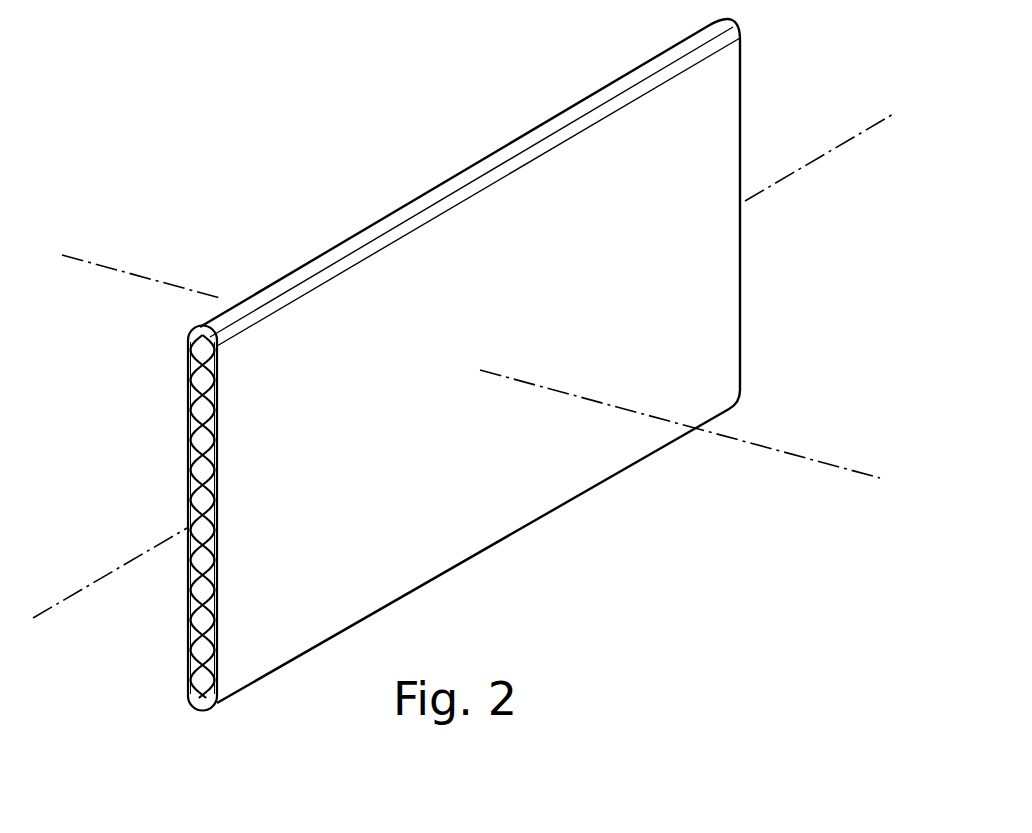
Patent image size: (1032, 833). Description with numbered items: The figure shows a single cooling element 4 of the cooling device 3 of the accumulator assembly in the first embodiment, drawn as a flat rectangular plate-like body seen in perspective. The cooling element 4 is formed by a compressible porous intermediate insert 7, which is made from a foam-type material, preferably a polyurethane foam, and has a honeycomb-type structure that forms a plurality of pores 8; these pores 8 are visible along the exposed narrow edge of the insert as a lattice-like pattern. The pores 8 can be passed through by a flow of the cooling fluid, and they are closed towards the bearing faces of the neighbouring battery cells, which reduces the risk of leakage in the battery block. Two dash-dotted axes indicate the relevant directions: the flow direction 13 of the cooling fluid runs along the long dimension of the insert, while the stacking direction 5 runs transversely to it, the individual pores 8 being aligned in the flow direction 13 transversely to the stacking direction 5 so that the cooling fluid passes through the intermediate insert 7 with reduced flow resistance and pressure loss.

The cooling element 4 is at (540, 356).
The compressible porous intermediate insert 7 is at (540, 356).
The cooling device 3 is at (790, 99).
The pores 8 is at (197, 640).
The flow direction 13 is at (855, 138).
The stacking direction 5 is at (752, 445).